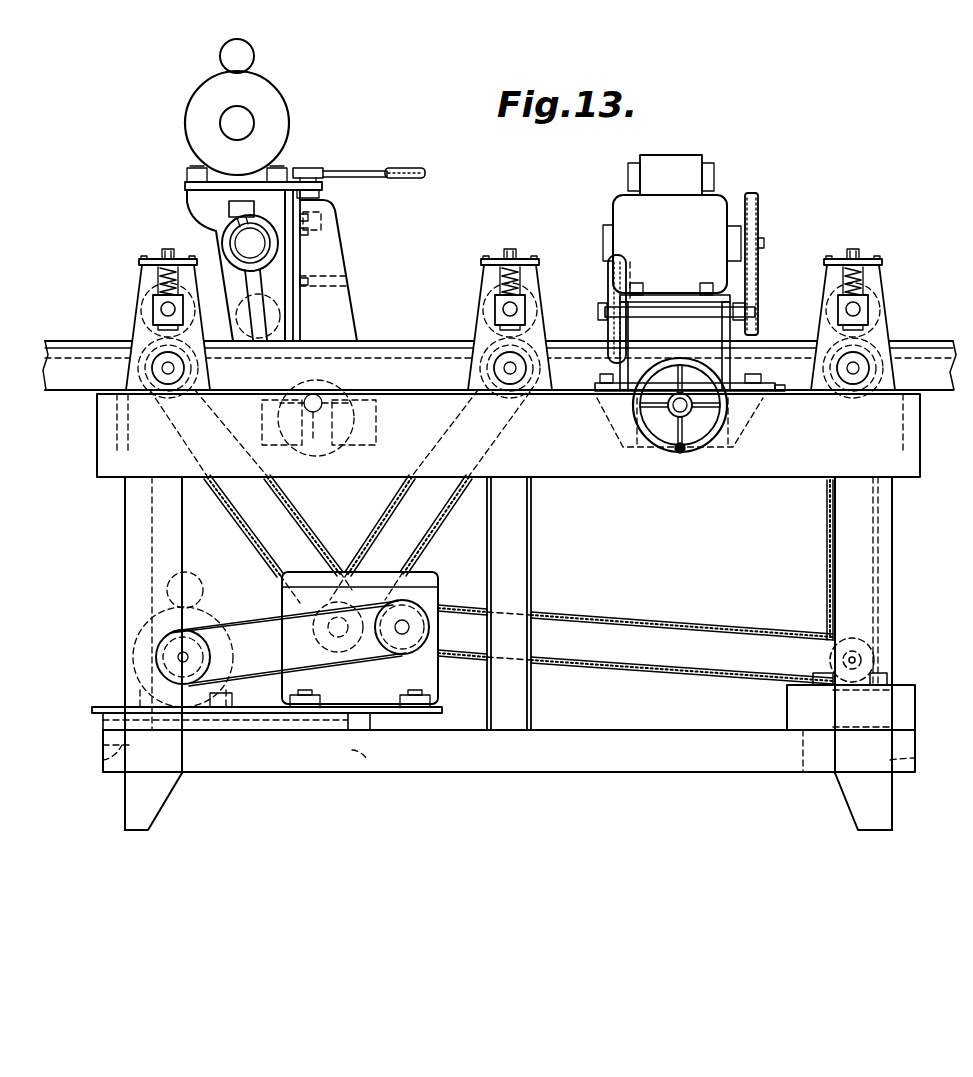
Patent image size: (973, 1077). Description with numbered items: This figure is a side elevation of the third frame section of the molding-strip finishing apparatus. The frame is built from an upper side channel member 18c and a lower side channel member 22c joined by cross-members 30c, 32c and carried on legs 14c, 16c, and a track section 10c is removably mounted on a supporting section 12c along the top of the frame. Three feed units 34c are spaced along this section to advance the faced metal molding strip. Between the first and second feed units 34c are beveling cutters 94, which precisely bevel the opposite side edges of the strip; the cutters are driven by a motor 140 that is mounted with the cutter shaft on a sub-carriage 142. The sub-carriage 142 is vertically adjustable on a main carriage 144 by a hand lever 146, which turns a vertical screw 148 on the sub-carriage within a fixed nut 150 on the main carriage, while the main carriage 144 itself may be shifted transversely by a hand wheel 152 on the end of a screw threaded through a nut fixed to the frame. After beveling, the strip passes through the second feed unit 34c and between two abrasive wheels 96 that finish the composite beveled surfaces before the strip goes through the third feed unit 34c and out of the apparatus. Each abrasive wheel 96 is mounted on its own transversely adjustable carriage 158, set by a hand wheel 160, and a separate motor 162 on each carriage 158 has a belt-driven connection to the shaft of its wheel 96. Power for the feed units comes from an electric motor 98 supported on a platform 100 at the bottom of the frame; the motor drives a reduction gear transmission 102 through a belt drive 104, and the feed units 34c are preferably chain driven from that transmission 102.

The track section 10c is at (392, 350).
The supporting section 12c is at (436, 352).
The leg 14c is at (140, 538).
The leg 16c is at (888, 565).
The upper side channel member 18c is at (596, 466).
The lower side channel member 22c is at (618, 765).
The cross-member 30c is at (99, 758).
The cross-member 32c is at (376, 770).
The feed unit 34c is at (134, 280).
The beveling cutter 94 is at (232, 302).
The abrasive wheel 96 is at (608, 300).
The electric motor 98 is at (208, 620).
The platform 100 is at (260, 713).
The reduction gear transmission 102 is at (432, 594).
The belt drive 104 is at (256, 624).
The motor 140 is at (273, 103).
The sub-carriage 142 is at (196, 198).
The main carriage 144 is at (338, 320).
The hand lever 146 is at (363, 170).
The vertical screw 148 is at (316, 244).
The fixed nut 150 is at (333, 213).
The hand wheel 152 is at (330, 455).
The transversely adjustable carriage 158 is at (745, 294).
The hand wheel 160 is at (706, 450).
The motor 162 is at (710, 210).